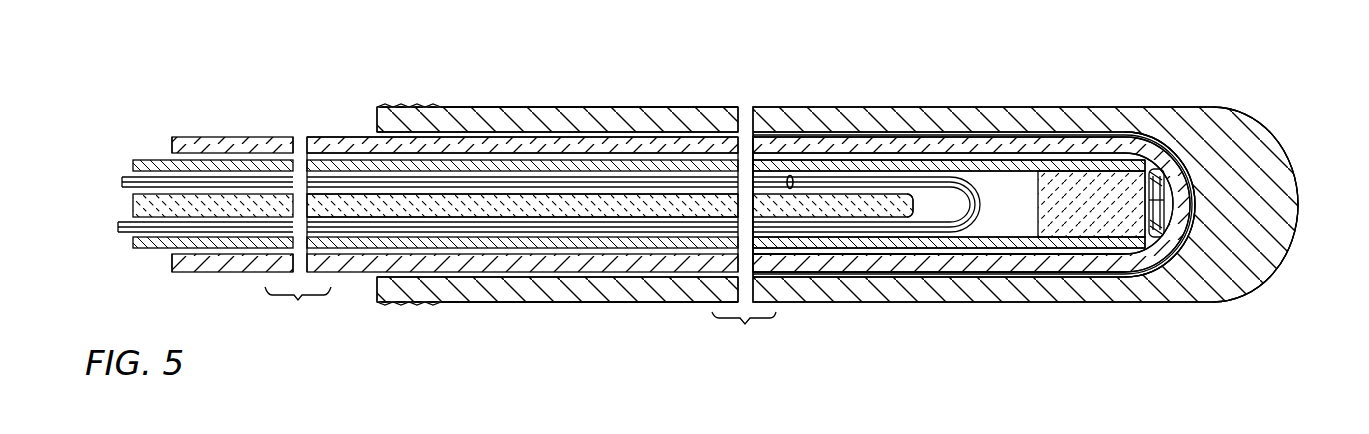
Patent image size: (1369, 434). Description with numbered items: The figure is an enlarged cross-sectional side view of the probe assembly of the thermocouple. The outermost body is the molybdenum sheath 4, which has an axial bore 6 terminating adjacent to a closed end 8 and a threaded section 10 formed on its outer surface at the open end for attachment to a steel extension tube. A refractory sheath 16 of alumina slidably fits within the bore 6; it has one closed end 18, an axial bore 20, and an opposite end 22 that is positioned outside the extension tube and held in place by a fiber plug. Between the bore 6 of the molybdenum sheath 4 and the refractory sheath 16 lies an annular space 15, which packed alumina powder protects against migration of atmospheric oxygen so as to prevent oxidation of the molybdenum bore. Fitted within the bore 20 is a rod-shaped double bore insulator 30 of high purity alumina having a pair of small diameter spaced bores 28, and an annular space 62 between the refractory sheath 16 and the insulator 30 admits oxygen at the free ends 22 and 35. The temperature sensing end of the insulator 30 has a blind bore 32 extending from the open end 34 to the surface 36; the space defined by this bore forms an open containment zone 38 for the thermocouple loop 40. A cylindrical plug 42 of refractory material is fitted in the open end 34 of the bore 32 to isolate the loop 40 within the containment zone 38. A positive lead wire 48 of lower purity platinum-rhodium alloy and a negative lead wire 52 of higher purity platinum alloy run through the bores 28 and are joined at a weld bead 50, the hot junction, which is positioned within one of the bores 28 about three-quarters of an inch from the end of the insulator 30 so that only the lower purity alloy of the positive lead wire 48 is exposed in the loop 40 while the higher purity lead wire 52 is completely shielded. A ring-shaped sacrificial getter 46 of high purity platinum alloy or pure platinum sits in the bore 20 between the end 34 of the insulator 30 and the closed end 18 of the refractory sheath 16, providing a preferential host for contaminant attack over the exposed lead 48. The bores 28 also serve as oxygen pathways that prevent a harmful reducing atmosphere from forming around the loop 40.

The molybdenum sheath 4 is at (530, 107).
The axial bore 6 is at (988, 145).
The closed end 8 is at (1293, 187).
The threaded section 10 is at (410, 107).
The annular space 15 is at (558, 133).
The refractory sheath 16 is at (605, 145).
The closed end 18 is at (1192, 187).
The axial bore 20 is at (1018, 177).
The end 22 is at (172, 152).
The spaced bores 28 is at (148, 171).
The double bore insulator 30 is at (555, 203).
The blind bore 32 is at (1040, 178).
The open end 34 is at (1155, 168).
The end 35 is at (133, 205).
The surface 36 is at (915, 220).
The containment zone 38 is at (1028, 213).
The thermocouple loop 40 is at (983, 218).
The cylindrical plug 42 is at (1038, 240).
The sacrificial getter 46 is at (1170, 215).
The positive lead wire 48 is at (118, 226).
The weld bead 50 is at (795, 185).
The negative lead wire 52 is at (122, 181).
The annular space 62 is at (203, 254).